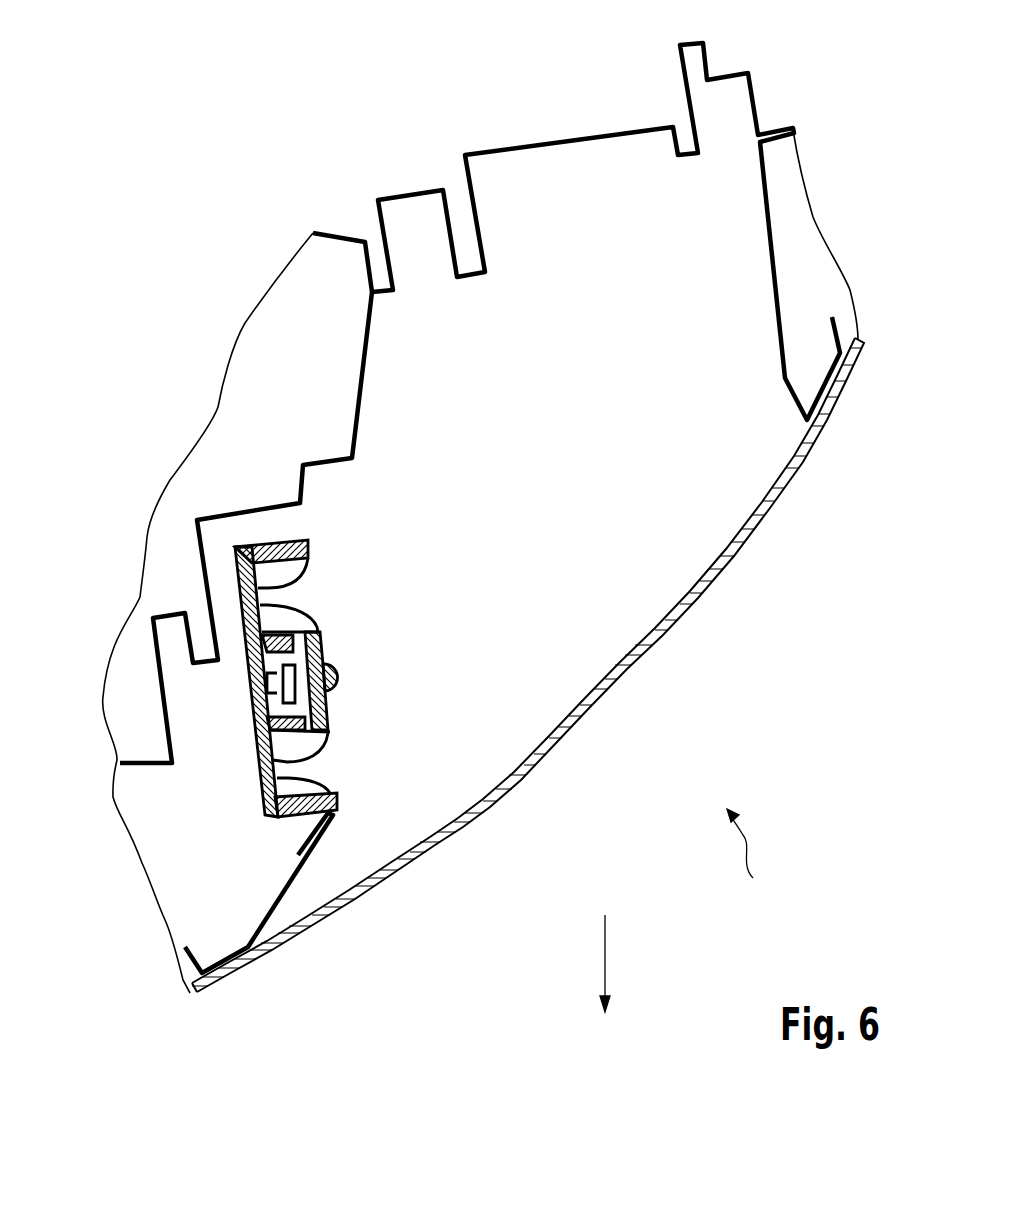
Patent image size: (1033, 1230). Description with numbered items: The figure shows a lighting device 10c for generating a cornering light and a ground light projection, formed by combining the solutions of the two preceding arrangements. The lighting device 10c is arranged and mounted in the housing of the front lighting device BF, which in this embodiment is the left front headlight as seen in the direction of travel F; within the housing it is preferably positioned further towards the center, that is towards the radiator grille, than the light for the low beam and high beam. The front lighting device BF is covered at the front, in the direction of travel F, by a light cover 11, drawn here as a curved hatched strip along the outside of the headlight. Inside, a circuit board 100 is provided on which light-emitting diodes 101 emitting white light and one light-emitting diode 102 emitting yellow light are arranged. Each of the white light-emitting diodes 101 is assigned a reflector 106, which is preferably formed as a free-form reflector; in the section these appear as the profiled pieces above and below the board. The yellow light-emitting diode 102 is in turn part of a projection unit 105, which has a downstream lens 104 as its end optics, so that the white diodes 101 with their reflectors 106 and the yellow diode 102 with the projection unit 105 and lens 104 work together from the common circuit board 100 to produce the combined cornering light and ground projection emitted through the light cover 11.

The lighting device 10c is at (306, 761).
The light cover 11 is at (665, 630).
The circuit board 100 is at (270, 803).
The light-emitting diodes 101 is at (262, 598).
The light-emitting diode 102 is at (273, 685).
The lens 104 is at (330, 677).
The projection unit 105 is at (297, 692).
The reflector 106 is at (262, 567).
The front lighting device BF is at (754, 865).
The direction of travel F is at (603, 958).